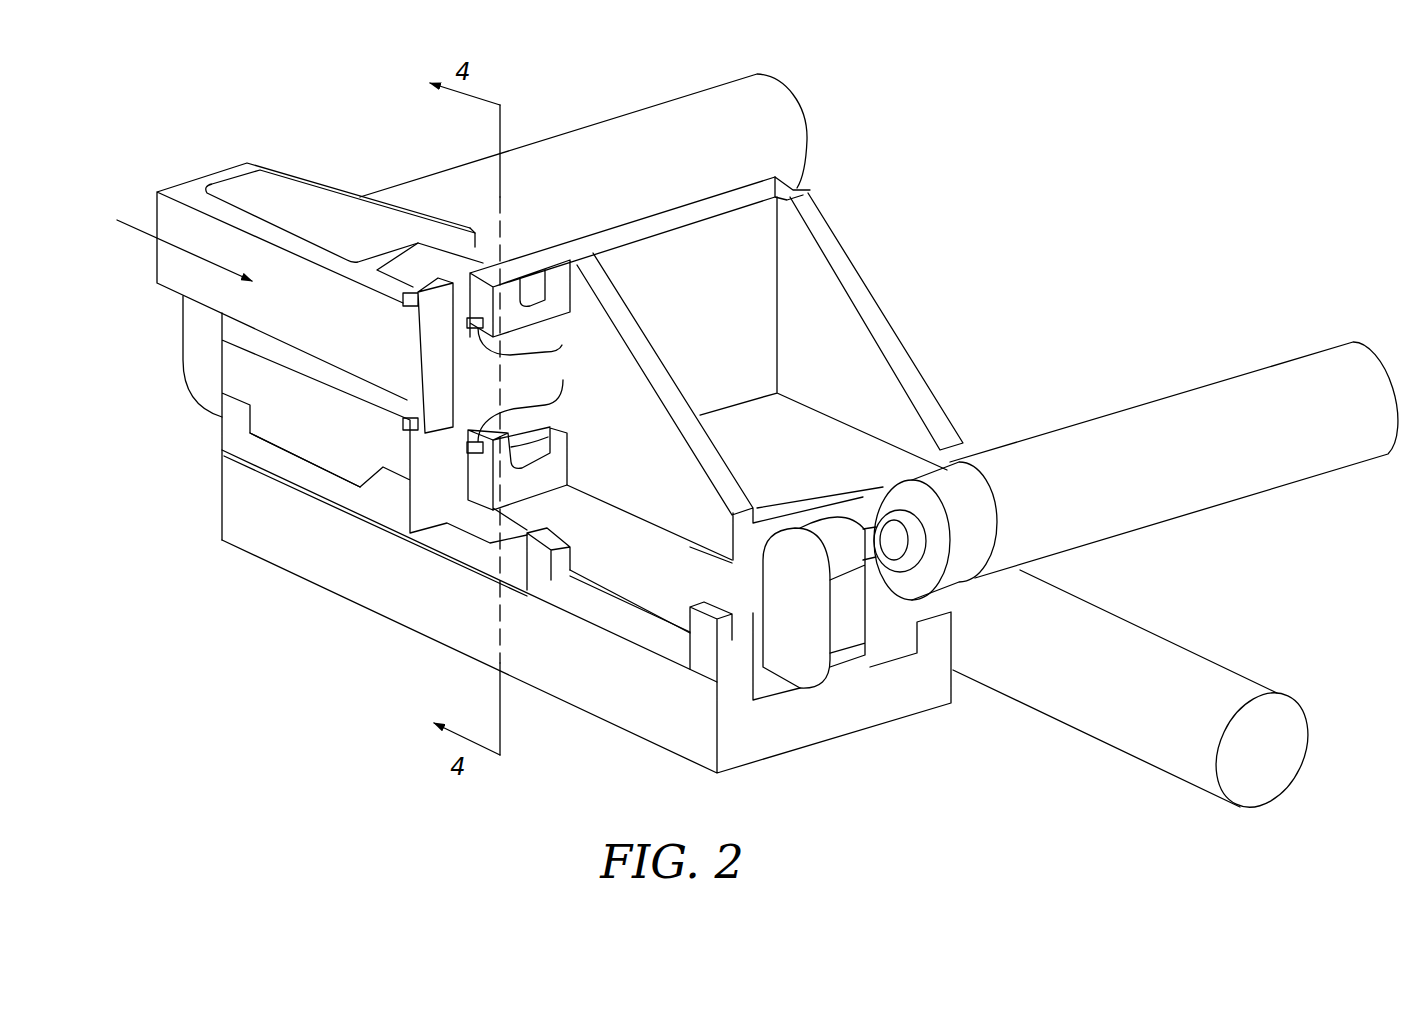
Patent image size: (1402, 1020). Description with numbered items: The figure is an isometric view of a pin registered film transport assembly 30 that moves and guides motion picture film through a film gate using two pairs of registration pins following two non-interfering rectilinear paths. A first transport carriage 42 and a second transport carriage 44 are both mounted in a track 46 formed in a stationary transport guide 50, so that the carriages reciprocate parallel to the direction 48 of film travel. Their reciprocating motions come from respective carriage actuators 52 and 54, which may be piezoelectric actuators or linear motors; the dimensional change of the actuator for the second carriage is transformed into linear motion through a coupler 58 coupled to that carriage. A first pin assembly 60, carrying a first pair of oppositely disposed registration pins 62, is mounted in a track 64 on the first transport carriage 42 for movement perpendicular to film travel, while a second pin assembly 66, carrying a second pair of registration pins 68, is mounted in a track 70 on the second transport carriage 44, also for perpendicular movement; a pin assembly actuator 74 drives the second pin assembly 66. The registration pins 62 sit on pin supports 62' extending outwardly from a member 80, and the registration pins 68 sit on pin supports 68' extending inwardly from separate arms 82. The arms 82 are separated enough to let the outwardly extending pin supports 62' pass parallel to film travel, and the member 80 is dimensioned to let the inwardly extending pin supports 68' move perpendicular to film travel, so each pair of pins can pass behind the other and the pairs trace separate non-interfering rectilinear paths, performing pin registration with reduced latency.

The film transport assembly 30 is at (916, 322).
The first transport carriage 42 is at (233, 433).
The second transport carriage 44 is at (707, 645).
The track 46 is at (517, 550).
The direction of film travel 48 is at (123, 230).
The stationary transport guide 50 is at (790, 725).
The carriage actuator 52 is at (790, 112).
The carriage actuator 54 is at (1273, 397).
The coupler 58 is at (845, 630).
The first pin assembly 60 is at (183, 185).
The registration pins 62 is at (403, 355).
The pin supports 62' is at (451, 500).
The track 64 is at (332, 460).
The second pin assembly 66 is at (727, 303).
The registration pins 68 is at (537, 406).
The pin supports 68' is at (535, 325).
The track 70 is at (613, 593).
The pin assembly actuator 74 is at (1290, 730).
The member 80 is at (290, 268).
The arms 82 is at (538, 257).